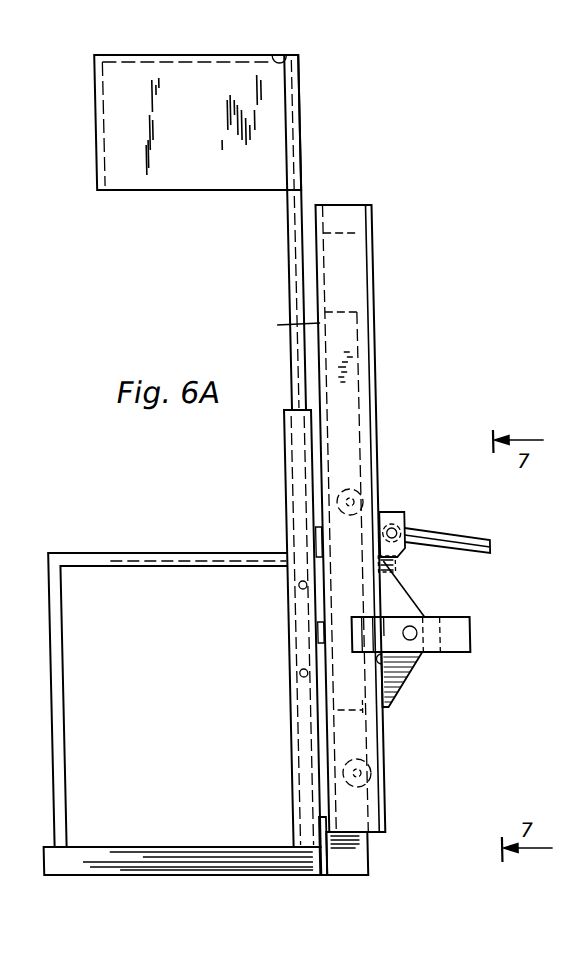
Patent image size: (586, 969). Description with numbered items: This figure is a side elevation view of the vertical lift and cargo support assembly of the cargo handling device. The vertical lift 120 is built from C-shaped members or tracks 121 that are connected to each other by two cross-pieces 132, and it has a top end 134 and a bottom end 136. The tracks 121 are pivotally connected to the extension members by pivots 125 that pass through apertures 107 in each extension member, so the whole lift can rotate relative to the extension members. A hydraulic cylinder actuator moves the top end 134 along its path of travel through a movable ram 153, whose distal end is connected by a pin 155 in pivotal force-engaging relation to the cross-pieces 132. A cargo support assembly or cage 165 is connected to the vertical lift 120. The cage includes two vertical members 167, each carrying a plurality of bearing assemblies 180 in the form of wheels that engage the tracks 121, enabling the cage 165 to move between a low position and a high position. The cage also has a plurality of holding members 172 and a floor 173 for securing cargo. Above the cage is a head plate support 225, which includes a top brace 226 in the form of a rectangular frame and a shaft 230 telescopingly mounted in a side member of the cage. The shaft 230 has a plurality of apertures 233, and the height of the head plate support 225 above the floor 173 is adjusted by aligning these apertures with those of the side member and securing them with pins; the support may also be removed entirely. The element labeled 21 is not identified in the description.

The head plate support 225 is at (330, 101).
The top brace 226 is at (309, 63).
The shaft 230 is at (300, 163).
The top end 134 is at (378, 205).
The track 121 is at (378, 260).
The vertical lift 120 is at (402, 501).
The vertical member 167 is at (279, 325).
The bearing assembly 180 is at (387, 612).
The cargo support assembly or cage 165 is at (201, 673).
The holding member 172 is at (169, 560).
The floor 173 is at (198, 852).
The aperture 233 is at (297, 589).
The pin 155 is at (393, 525).
The ram 153 is at (442, 537).
The cross-piece 132 is at (399, 557).
The aperture 107 is at (405, 622).
The pivot 125 is at (414, 633).
The wedge block 21 is at (379, 677).
The bottom end 136 is at (370, 823).